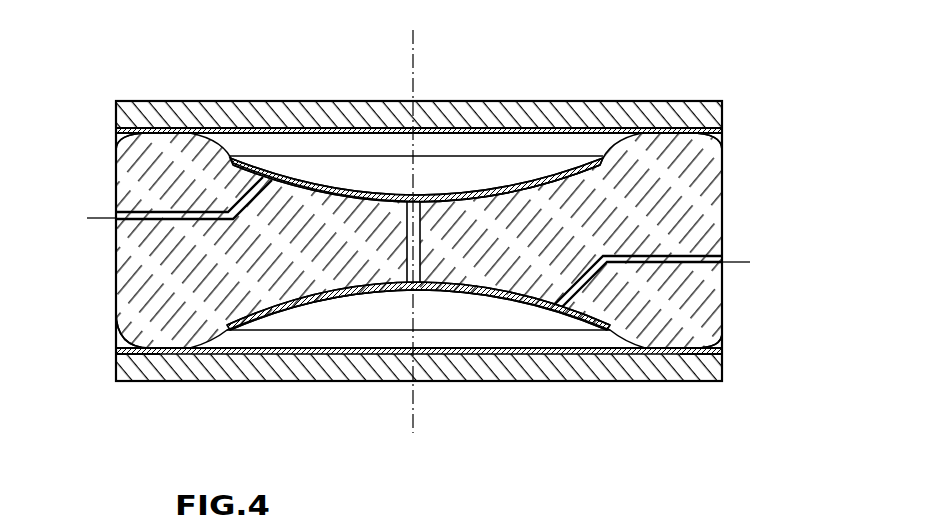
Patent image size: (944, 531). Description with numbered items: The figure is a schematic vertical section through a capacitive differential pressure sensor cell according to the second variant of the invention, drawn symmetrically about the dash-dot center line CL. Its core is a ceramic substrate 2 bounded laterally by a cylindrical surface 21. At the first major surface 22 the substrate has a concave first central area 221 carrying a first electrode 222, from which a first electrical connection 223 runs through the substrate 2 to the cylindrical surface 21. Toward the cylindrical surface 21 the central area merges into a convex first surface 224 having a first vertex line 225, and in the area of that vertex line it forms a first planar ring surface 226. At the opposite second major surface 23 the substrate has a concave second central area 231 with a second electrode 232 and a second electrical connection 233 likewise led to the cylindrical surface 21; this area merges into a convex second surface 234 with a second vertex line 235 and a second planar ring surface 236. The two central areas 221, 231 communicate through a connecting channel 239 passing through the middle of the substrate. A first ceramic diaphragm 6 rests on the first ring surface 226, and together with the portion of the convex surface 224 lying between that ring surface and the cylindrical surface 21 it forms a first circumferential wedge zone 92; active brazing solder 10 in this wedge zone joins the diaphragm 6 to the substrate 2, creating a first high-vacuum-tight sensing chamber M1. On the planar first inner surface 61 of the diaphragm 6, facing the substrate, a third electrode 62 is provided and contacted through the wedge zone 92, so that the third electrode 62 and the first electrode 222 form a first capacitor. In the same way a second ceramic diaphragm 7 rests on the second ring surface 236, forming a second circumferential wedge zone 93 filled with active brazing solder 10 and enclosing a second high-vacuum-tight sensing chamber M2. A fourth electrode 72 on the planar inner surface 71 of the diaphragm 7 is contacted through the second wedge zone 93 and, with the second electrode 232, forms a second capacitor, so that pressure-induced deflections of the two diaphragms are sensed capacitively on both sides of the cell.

The ceramic substrate 2 is at (724, 157).
The first ceramic diaphragm 6 is at (660, 130).
The second ceramic diaphragm 7 is at (678, 372).
The active brazing solder 10 is at (116, 353).
The cylindrical surface 21 is at (726, 202).
The first major surface 22 is at (533, 172).
The second major surface 23 is at (533, 318).
The planar first inner surface 61 is at (362, 134).
The third electrode 62 is at (471, 138).
The planar inner surface 71 is at (490, 352).
The fourth electrode 72 is at (590, 356).
The first circumferential wedge zone 92 is at (115, 136).
The second circumferential wedge zone 93 is at (724, 351).
The concave first central area 221 is at (287, 182).
The first electrode 222 is at (330, 172).
The first electrical connection 223 is at (140, 232).
The convex first surface 224 is at (153, 146).
The first vertex line 225 is at (166, 117).
The first planar ring surface 226 is at (685, 119).
The concave second central area 231 is at (448, 288).
The second electrode 232 is at (282, 305).
The second electrical connection 233 is at (700, 256).
The convex second surface 234 is at (151, 342).
The second vertex line 235 is at (157, 356).
The second planar ring surface 236 is at (679, 346).
The connecting channel 239 is at (407, 252).
The first high-vacuum-tight sensing chamber M1 is at (505, 148).
The second high-vacuum-tight sensing chamber M2 is at (326, 337).
The central axis CL is at (421, 36).